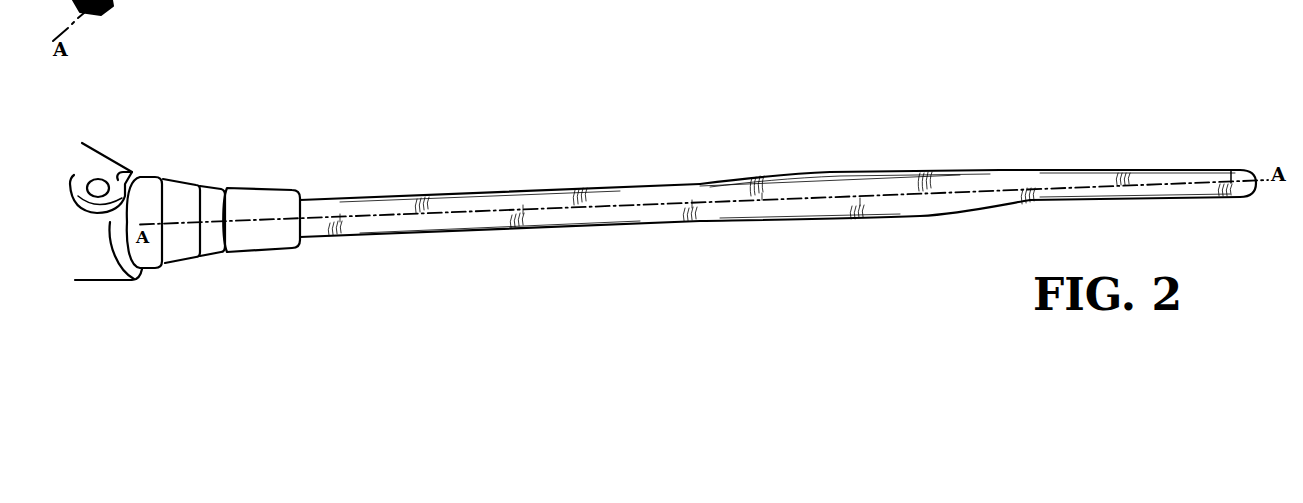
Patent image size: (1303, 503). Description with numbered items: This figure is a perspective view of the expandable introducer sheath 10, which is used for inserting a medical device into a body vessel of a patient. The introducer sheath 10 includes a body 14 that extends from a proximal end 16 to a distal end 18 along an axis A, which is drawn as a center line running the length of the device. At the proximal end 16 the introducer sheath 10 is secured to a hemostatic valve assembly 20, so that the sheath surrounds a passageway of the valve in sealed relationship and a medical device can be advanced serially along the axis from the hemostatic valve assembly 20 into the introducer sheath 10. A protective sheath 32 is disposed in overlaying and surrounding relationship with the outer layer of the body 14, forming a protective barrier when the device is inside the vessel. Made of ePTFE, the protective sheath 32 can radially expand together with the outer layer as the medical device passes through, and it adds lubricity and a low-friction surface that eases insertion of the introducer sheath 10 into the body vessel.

The expandable introducer sheath 10 is at (828, 130).
The body 14 is at (933, 171).
The proximal end 16 is at (197, 192).
The distal end 18 is at (1250, 168).
The hemostatic valve assembly 20 is at (100, 160).
The protective sheath 32 is at (625, 195).